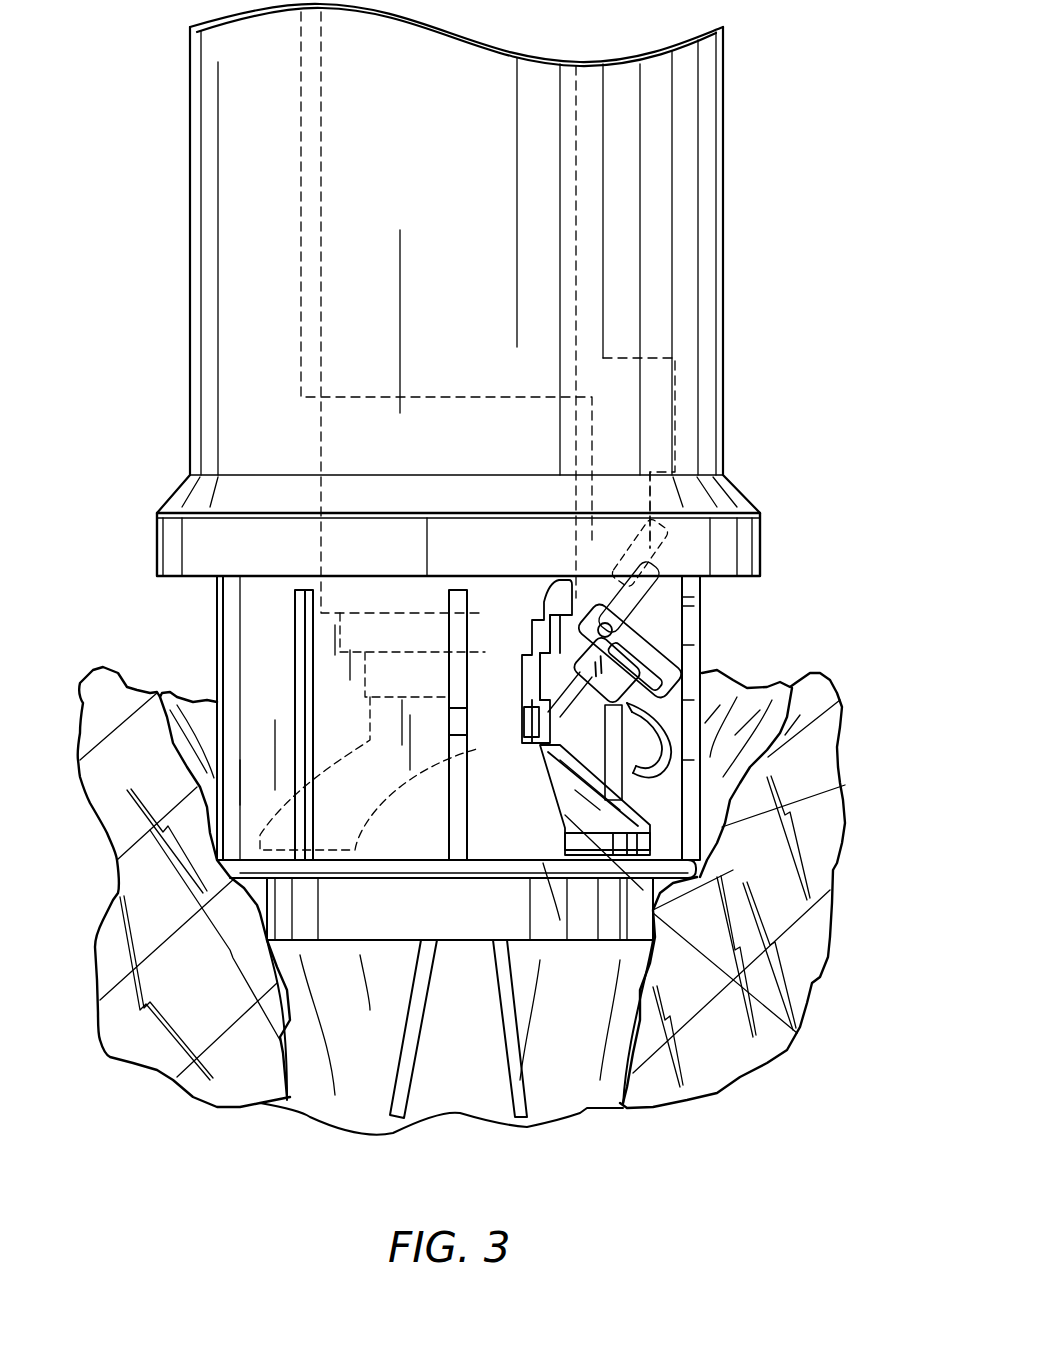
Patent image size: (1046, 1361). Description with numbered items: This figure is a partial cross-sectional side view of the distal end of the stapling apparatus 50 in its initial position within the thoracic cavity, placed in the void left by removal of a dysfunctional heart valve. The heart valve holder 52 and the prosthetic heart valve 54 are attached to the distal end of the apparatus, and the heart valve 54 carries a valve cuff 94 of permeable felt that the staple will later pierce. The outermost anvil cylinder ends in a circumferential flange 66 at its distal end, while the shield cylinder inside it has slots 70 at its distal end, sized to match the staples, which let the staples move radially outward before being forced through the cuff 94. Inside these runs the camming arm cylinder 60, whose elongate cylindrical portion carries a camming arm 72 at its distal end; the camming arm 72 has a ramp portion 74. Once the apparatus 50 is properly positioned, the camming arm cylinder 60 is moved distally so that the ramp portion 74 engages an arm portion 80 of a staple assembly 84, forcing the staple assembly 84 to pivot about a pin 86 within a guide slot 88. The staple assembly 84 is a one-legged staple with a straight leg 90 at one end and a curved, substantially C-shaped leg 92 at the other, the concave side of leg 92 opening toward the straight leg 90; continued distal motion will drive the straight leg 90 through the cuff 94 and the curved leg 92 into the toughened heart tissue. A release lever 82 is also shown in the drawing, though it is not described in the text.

The stapling apparatus 50 is at (770, 77).
The heart valve holder 52 is at (753, 1037).
The prosthetic heart valve 54 is at (447, 925).
The camming arm cylinder 60 is at (603, 262).
The circumferential flange 66 is at (170, 547).
The slots 70 is at (457, 830).
The camming arm 72 is at (660, 382).
The ramp portion 74 is at (690, 535).
The arm portion 80 is at (652, 600).
The release lever 82 is at (640, 775).
The staple assembly 84 is at (560, 666).
The pin 86 is at (590, 625).
The guide slot 88 is at (650, 705).
The straight leg 90 is at (817, 980).
The curved C-shaped leg 92 is at (640, 800).
The valve cuff 94 is at (543, 863).